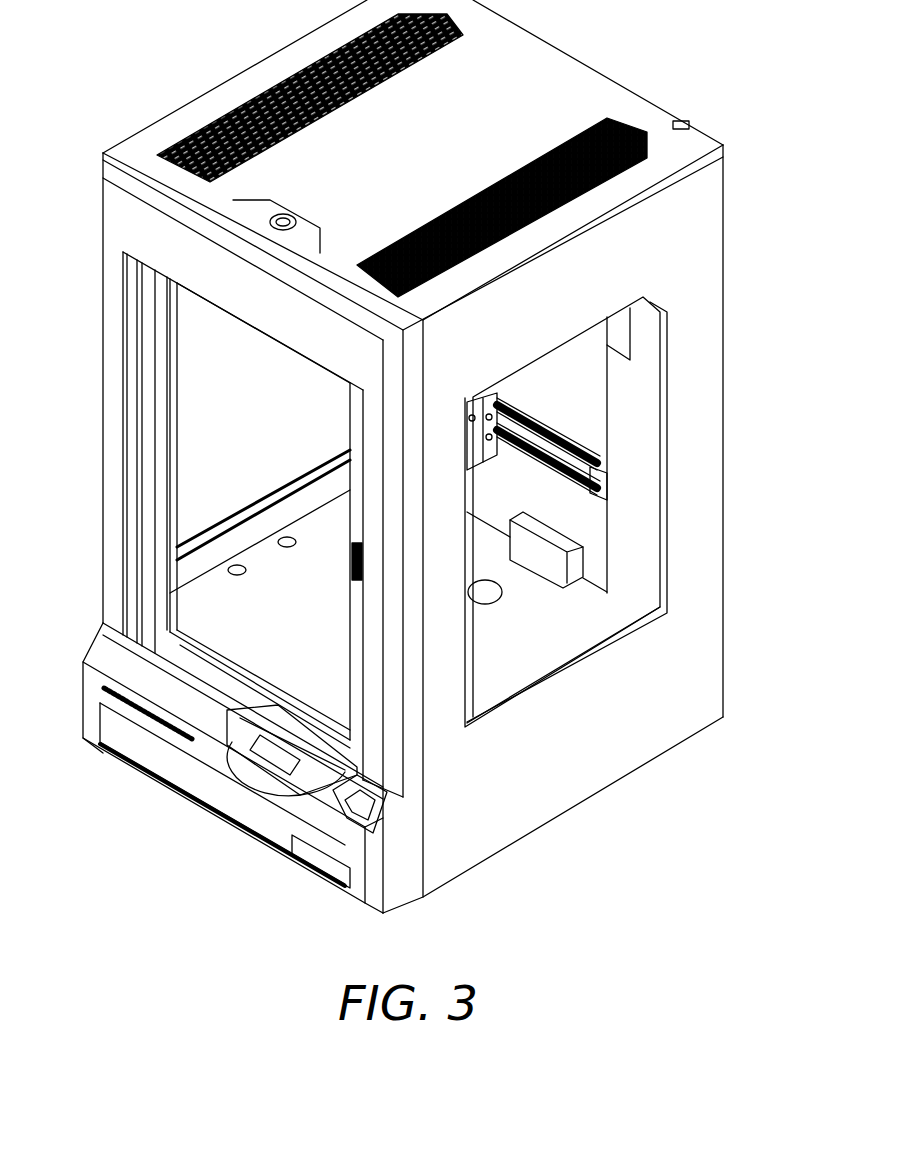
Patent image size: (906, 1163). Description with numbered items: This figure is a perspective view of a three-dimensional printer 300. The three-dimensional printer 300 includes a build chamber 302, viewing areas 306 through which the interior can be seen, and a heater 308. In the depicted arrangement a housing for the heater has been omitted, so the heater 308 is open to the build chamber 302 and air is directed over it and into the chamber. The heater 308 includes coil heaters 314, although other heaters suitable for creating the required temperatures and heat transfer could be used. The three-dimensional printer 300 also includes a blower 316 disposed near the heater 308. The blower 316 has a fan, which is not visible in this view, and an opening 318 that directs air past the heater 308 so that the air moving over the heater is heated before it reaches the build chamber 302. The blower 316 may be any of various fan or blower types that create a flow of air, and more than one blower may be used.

The three-dimensional printer 300 is at (693, 58).
The build chamber 302 is at (230, 400).
The viewing areas 306 is at (652, 320).
The heater 308 is at (613, 465).
The coil heaters 314 is at (590, 442).
The blower 316 is at (523, 637).
The opening 318 is at (553, 535).